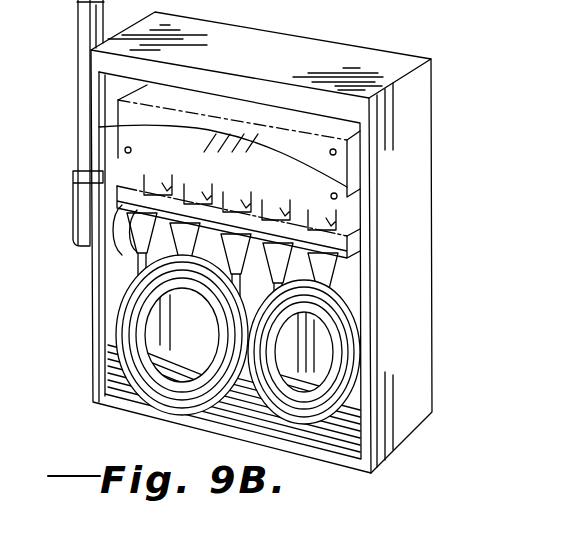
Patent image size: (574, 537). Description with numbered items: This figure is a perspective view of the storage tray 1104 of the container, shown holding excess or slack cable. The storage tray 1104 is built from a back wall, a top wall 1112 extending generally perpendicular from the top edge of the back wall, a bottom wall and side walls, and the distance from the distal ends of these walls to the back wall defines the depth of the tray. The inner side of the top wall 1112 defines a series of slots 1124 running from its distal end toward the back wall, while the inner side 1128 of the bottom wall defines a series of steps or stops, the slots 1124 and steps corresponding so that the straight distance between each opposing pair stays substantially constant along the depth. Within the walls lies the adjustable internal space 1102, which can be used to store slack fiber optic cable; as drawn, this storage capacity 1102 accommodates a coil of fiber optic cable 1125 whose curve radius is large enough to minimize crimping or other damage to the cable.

The storage tray 1104 is at (414, 414).
The top wall 1112 is at (357, 54).
The slots 1124 is at (138, 167).
The internal space 1102 is at (172, 318).
The coil of fiber optic cable 1125 is at (148, 402).
The inner side 1128 is at (208, 412).